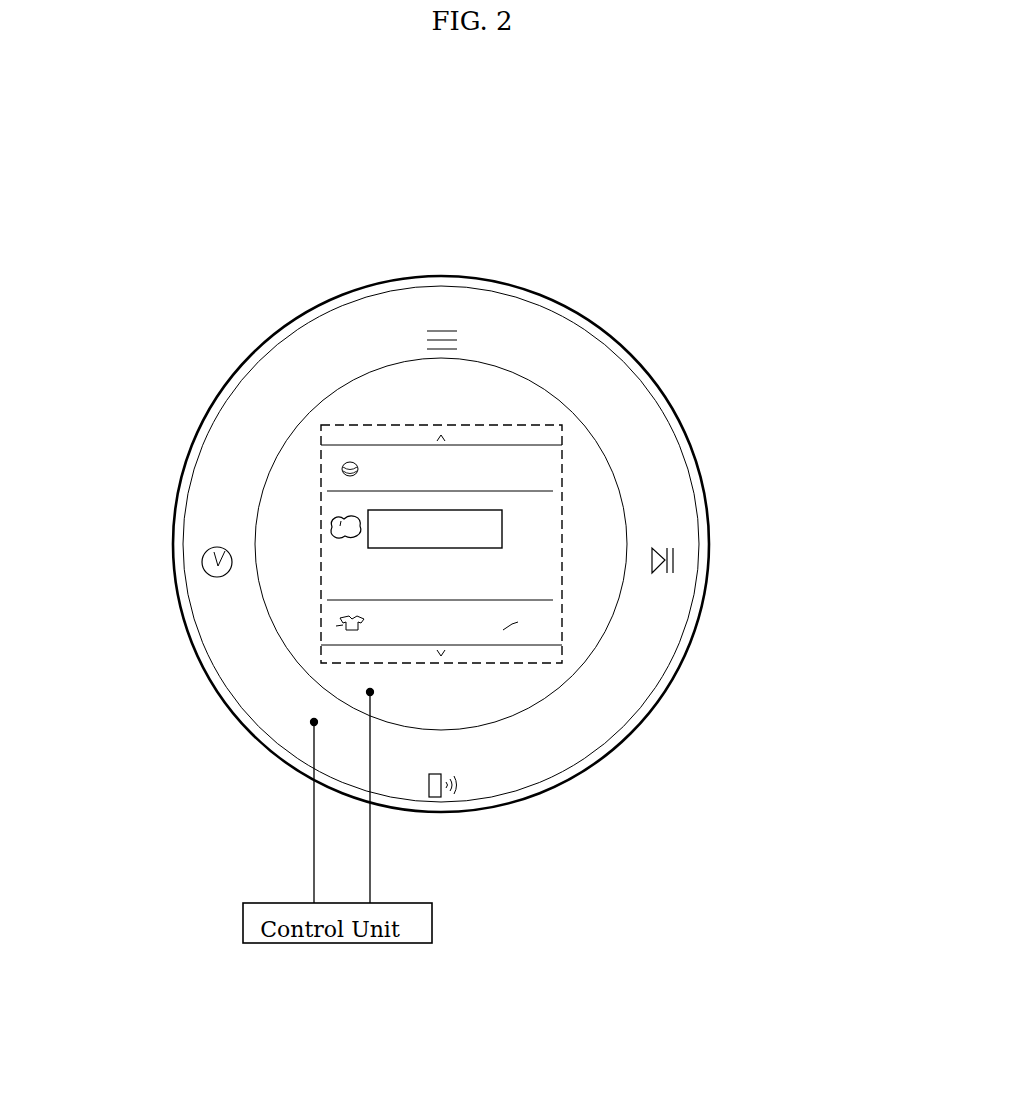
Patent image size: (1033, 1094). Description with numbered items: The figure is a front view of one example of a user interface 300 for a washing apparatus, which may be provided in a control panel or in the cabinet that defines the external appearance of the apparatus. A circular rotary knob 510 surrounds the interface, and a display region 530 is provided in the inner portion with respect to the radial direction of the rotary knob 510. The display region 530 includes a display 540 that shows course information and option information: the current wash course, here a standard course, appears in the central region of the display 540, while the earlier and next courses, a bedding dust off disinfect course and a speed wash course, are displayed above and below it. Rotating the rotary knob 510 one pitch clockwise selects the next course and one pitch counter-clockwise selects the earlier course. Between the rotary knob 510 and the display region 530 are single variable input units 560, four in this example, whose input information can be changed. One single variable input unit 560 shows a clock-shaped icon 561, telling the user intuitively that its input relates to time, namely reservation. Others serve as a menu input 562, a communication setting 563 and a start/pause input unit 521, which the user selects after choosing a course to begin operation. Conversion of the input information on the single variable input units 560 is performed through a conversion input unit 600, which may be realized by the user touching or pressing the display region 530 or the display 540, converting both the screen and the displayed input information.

The user interface 300 is at (563, 285).
The rotary knob 510 is at (634, 352).
The display region 530 is at (580, 496).
The display 540 is at (550, 582).
The conversion input unit 600 is at (518, 622).
The start/pause input unit 521 is at (676, 556).
The single variable input unit 560 is at (427, 320).
The clock-shaped icon 561 is at (202, 570).
The menu input 562 is at (458, 337).
The communication setting 563 is at (423, 788).